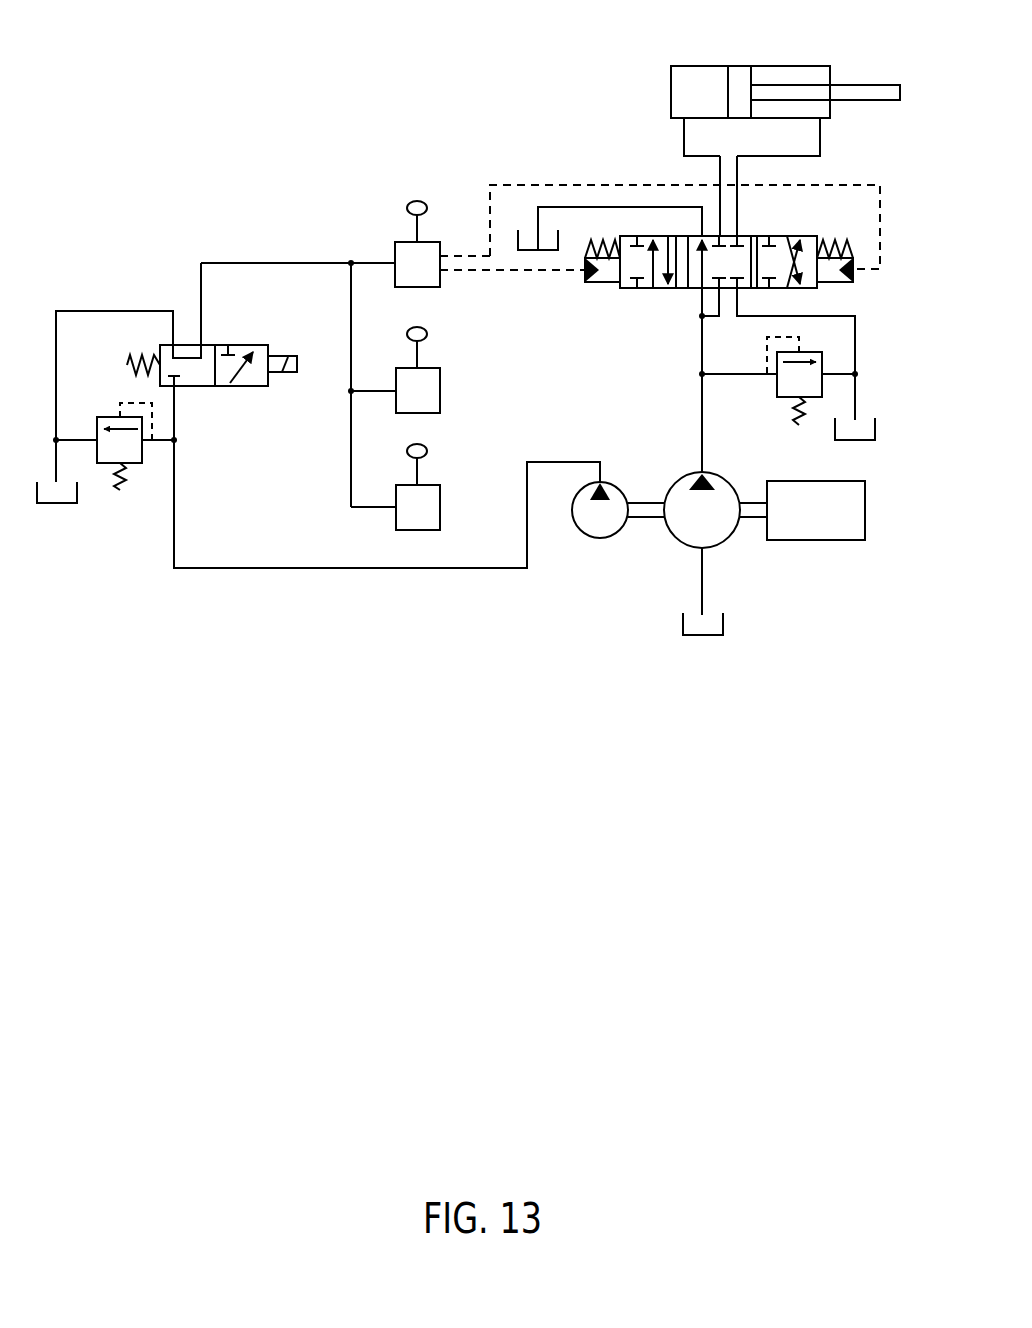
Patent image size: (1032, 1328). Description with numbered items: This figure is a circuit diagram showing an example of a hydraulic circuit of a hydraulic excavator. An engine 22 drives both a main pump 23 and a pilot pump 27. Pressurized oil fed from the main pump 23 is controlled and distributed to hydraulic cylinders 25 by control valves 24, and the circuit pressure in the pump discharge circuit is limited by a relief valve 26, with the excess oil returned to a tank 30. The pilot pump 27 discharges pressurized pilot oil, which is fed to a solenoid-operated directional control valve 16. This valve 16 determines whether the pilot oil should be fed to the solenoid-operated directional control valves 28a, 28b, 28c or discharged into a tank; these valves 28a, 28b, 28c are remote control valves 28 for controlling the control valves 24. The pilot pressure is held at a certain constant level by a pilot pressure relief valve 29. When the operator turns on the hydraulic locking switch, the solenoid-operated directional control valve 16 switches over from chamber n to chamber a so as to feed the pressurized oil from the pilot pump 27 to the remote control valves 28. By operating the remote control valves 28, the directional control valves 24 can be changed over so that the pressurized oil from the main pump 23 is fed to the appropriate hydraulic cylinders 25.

The solenoid-operated directional control valve 16 is at (237, 345).
The engine 22 is at (820, 541).
The main pump 23 is at (680, 543).
The control valve 24 is at (781, 235).
The hydraulic cylinder 25 is at (781, 65).
The relief valve 26 is at (777, 387).
The pilot pump 27 is at (586, 540).
The remote control valves 28 is at (356, 238).
The solenoid-operated directional control valve 28a is at (442, 277).
The solenoid-operated directional control valve 28b is at (441, 381).
The solenoid-operated directional control valve 28c is at (441, 497).
The pilot pressure relief valve 29 is at (134, 464).
The tank 30 is at (876, 436).